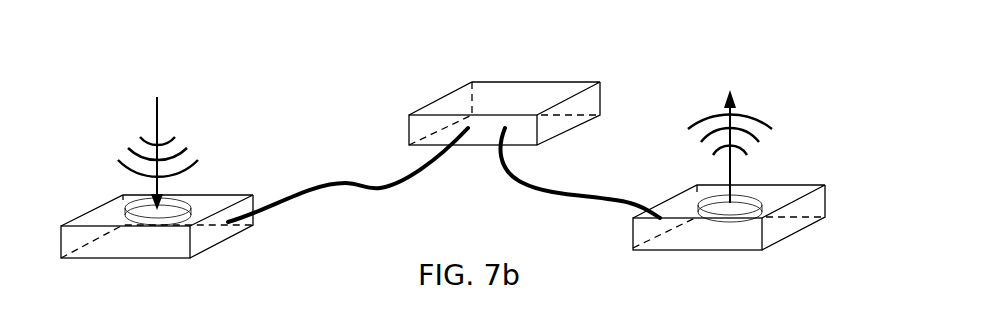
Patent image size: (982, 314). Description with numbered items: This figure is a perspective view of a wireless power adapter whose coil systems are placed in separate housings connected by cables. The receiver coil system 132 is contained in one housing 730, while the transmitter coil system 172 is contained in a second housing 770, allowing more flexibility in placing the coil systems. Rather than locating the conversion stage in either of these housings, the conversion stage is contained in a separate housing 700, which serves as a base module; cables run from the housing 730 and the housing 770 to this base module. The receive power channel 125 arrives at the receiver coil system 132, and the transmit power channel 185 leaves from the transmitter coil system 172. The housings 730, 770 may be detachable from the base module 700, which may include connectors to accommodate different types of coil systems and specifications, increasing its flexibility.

The receive power channel 125 is at (158, 141).
The receiver coil system 132 is at (130, 207).
The housing 730 is at (217, 205).
The separate housing 700 is at (547, 92).
The transmit power channel 185 is at (730, 133).
The transmitter coil system 172 is at (707, 198).
The housing 770 is at (788, 195).